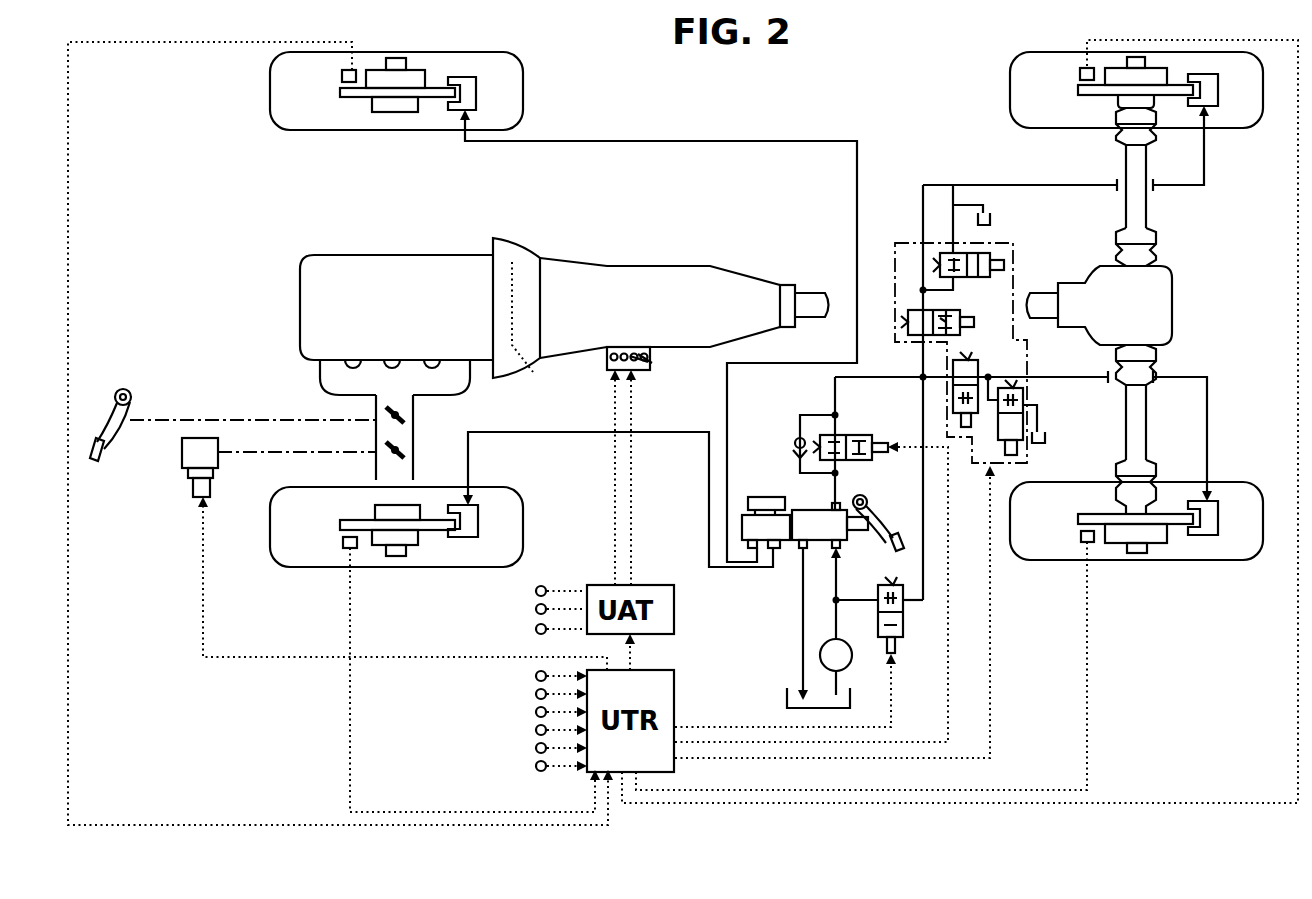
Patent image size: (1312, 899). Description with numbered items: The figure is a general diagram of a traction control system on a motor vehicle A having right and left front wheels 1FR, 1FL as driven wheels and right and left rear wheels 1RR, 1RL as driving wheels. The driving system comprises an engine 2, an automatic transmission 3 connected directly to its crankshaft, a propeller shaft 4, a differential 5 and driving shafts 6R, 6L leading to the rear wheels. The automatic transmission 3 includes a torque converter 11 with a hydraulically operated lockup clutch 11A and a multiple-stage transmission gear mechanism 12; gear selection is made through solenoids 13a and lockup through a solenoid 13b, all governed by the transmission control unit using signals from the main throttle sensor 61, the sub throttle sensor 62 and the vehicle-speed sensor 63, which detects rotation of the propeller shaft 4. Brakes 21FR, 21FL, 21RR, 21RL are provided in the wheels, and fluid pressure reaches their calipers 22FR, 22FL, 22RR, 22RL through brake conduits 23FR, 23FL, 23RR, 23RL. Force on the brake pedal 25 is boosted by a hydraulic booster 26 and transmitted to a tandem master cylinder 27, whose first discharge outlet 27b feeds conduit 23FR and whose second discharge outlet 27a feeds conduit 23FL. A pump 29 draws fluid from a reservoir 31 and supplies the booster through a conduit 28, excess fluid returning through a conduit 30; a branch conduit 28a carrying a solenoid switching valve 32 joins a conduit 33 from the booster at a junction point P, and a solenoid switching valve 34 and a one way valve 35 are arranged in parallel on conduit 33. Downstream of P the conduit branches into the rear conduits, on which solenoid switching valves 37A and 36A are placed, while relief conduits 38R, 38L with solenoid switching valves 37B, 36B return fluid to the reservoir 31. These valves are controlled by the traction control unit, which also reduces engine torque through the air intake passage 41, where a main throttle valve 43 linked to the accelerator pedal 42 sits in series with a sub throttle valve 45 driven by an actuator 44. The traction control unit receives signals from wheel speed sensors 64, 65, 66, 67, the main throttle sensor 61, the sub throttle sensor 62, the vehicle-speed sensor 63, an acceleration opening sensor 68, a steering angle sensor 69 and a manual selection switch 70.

The right front wheel 1FR is at (270, 94).
The left front wheel 1FL is at (270, 532).
The right rear wheel 1RR is at (1010, 96).
The left rear wheel 1RL is at (1030, 556).
The engine 2 is at (369, 268).
The automatic transmission 3 is at (619, 262).
The propeller shaft 4 is at (820, 296).
The differential 5 is at (1172, 305).
The right driving shaft 6R is at (1126, 218).
The left driving shaft 6L is at (1146, 432).
The torque converter 11 is at (532, 262).
The lockup clutch 11A is at (528, 332).
The multiple-stage transmission gear mechanism 12 is at (672, 277).
The solenoids 13a is at (650, 360).
The solenoid 13b is at (610, 466).
The brake 21FR is at (448, 68).
The brake 21FL is at (430, 552).
The brake 21RR is at (1175, 64).
The brake 21RL is at (1165, 548).
The caliper 22FR is at (478, 94).
The caliper 22FL is at (480, 520).
The caliper 22RR is at (1220, 92).
The caliper 22RL is at (1216, 538).
The brake conduit 23FR is at (712, 141).
The brake conduit 23FL is at (566, 432).
The brake conduit 23RR is at (1012, 186).
The brake conduit 23RL is at (1207, 422).
The brake pedal 25 is at (881, 535).
The hydraulic booster 26 is at (812, 520).
The tandem type master cylinder 27 is at (752, 497).
The second discharge outlet 27a is at (777, 555).
The first discharge outlet 27b is at (750, 548).
The conduit 28 is at (836, 608).
The branch conduit 28a is at (910, 612).
The pump 29 is at (852, 662).
The conduit 30 is at (803, 654).
The reservoir 31 is at (992, 221).
The solenoid switching valve 32 is at (876, 600).
The conduit 33 is at (846, 378).
The solenoid switching valve 34 is at (874, 444).
The one way valve 35 is at (795, 443).
The solenoid switching valve 36A is at (978, 368).
The solenoid switching valve 36B is at (1023, 398).
The solenoid switching valve 37A is at (973, 322).
The solenoid switching valve 37B is at (948, 253).
The relief conduit 38R is at (956, 200).
The relief conduit 38L is at (1038, 428).
The air intake passage 41 is at (376, 437).
The accelerator pedal 42 is at (96, 463).
The main throttle valve 43 is at (406, 414).
The actuator 44 is at (182, 462).
The sub throttle valve 45 is at (410, 452).
The main throttle sensor 61 is at (536, 590).
The sub throttle sensor 62 is at (536, 609).
The vehicle-speed sensor 63 is at (536, 629).
The wheel speed sensor 64 is at (357, 68).
The wheel speed sensor 65 is at (350, 550).
The wheel speed sensor 66 is at (1080, 72).
The wheel speed sensor 67 is at (1090, 544).
The acceleration opening sensor 68 is at (536, 731).
The steering angle sensor 69 is at (536, 749).
The manual selection switch 70 is at (536, 768).
The motor vehicle A is at (851, 123).
The junction point P is at (921, 376).